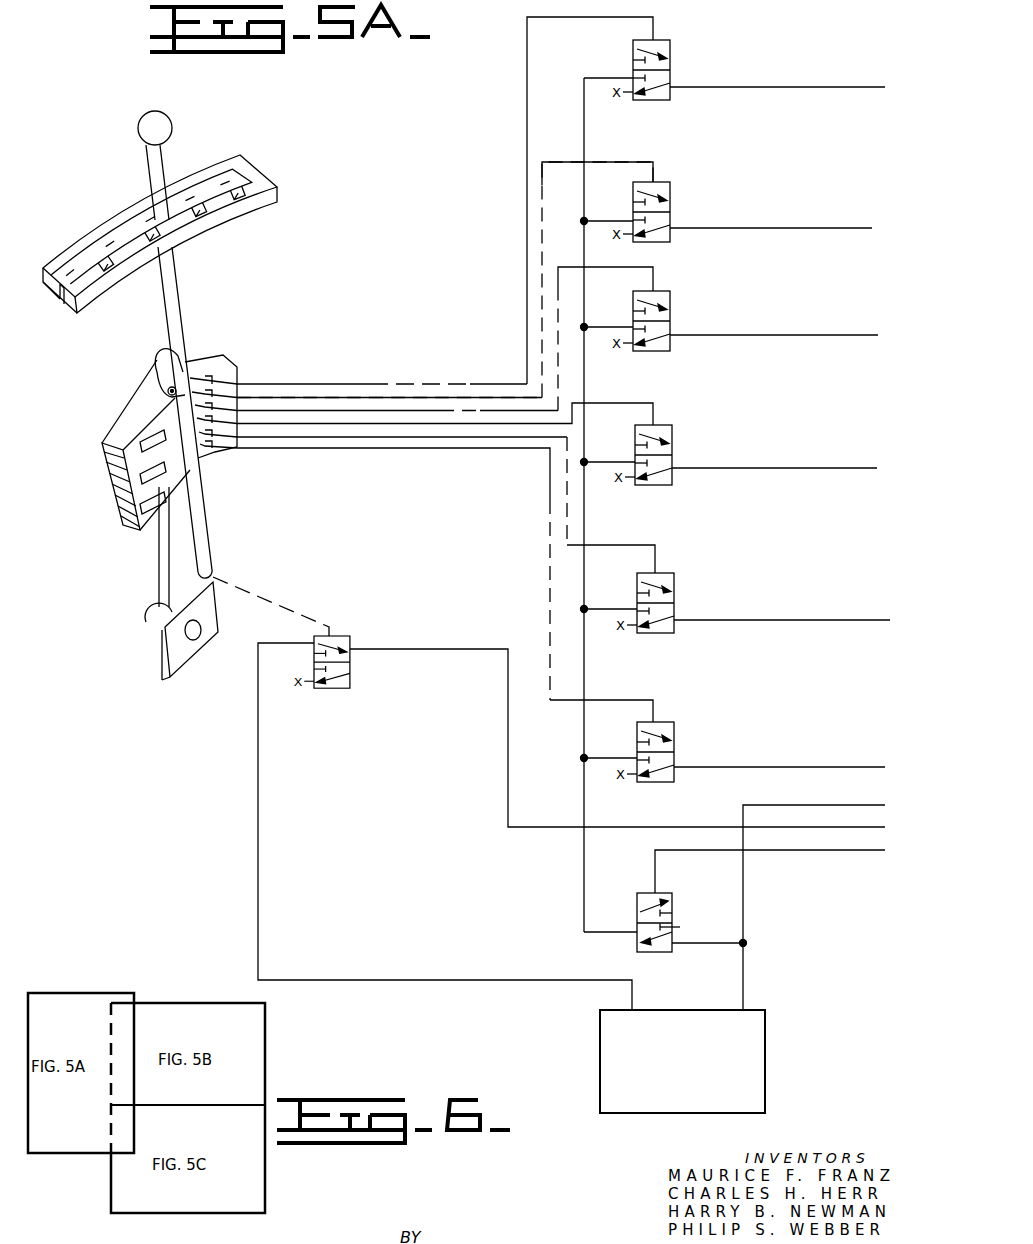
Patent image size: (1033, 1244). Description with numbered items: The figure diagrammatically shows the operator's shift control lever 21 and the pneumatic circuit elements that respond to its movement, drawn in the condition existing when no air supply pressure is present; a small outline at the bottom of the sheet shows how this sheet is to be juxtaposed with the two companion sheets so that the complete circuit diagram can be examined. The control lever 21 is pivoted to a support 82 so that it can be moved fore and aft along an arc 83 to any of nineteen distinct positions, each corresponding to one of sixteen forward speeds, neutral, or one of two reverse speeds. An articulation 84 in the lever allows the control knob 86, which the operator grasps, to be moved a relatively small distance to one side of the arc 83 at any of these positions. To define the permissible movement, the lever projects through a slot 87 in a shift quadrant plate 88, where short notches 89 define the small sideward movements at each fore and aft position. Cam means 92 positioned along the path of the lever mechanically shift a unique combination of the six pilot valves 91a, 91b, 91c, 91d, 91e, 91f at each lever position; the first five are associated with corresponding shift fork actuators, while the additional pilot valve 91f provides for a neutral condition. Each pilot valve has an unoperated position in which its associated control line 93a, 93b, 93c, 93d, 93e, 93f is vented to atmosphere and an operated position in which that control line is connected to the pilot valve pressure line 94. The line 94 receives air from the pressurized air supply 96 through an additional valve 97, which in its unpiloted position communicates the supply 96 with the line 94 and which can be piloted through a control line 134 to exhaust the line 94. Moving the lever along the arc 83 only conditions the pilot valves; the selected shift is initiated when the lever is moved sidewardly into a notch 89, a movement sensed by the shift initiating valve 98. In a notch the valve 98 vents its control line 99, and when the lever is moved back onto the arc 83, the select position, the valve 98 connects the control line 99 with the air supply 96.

The operator's shift control lever 21 is at (118, 180).
The support 82 is at (182, 655).
The arc 83 is at (36, 317).
The articulation 84 is at (162, 384).
The control knob 86 is at (147, 117).
The slot 87 is at (183, 188).
The shift quadrant plate 88 is at (205, 223).
The notches 89 is at (243, 190).
The pilot valve 91a is at (672, 222).
The pilot valve 91b is at (675, 445).
The pilot valve 91c is at (672, 300).
The pilot valve 91d is at (672, 62).
The pilot valve 91e is at (675, 742).
The pilot valve 91f is at (674, 595).
The cam means 92 is at (228, 462).
The control line 93a is at (760, 228).
The control line 93b is at (742, 470).
The control line 93c is at (705, 335).
The control line 93d is at (730, 86).
The control line 93e is at (745, 767).
The control line 93f is at (742, 620).
The pilot valve pressure line 94 is at (588, 384).
The air supply 96 is at (259, 810).
The valve 97 is at (660, 893).
The shift initiating valve 98 is at (338, 690).
The control line 99 is at (478, 650).
The control line 134 is at (858, 852).